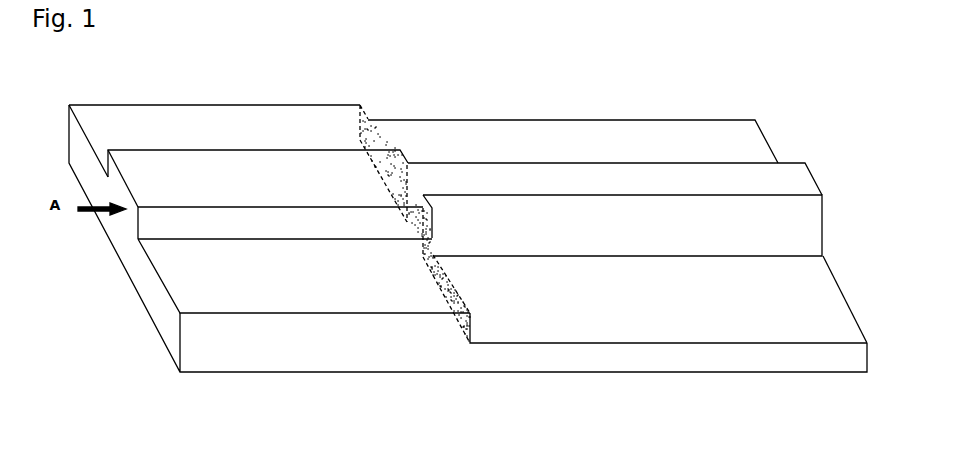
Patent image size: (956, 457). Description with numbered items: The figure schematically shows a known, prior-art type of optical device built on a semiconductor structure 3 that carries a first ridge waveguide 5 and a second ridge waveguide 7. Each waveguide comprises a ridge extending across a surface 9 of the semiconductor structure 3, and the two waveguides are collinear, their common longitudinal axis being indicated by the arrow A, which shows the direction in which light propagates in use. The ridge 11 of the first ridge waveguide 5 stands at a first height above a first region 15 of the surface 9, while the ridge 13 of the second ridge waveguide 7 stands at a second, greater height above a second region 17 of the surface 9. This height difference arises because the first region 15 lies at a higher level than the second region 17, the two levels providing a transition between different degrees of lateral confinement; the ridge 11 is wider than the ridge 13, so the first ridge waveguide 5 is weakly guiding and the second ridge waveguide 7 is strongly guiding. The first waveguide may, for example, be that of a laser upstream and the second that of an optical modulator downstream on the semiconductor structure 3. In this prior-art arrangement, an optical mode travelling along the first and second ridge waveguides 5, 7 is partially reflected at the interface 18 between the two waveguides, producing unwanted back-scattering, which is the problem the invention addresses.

The semiconductor structure 3 is at (150, 297).
The first ridge waveguide 5 is at (137, 167).
The second ridge waveguide 7 is at (790, 175).
The surface 9 is at (105, 128).
The ridge 11 is at (147, 219).
The ridge 13 is at (813, 217).
The first region 15 is at (158, 255).
The second region 17 is at (833, 323).
The interface 18 is at (450, 297).